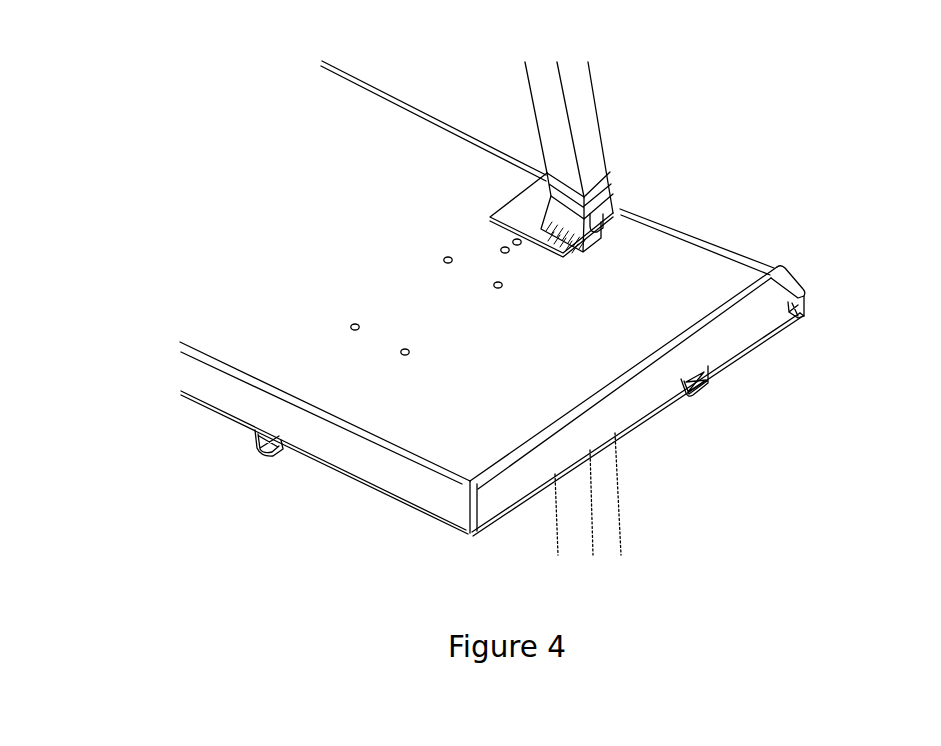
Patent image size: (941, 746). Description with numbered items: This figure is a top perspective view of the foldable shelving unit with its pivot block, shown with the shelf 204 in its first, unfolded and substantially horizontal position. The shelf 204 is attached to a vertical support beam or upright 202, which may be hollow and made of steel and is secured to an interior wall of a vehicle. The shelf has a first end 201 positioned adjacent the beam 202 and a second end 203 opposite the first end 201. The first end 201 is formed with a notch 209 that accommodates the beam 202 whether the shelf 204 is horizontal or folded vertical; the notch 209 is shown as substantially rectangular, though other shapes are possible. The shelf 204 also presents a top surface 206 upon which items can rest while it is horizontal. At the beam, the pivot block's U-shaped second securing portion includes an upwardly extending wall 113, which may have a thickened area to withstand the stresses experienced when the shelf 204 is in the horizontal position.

The first end 201 is at (663, 207).
The support beam or upright 202 is at (615, 123).
The second end 203 is at (295, 474).
The shelf 204 is at (814, 264).
The top surface 206 is at (589, 370).
The notch 209 is at (539, 185).
The upwardly extending wall 113 is at (537, 220).